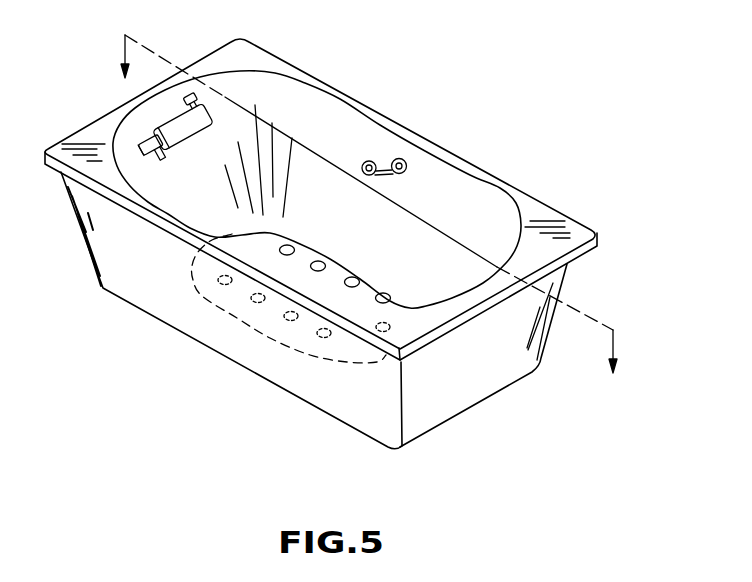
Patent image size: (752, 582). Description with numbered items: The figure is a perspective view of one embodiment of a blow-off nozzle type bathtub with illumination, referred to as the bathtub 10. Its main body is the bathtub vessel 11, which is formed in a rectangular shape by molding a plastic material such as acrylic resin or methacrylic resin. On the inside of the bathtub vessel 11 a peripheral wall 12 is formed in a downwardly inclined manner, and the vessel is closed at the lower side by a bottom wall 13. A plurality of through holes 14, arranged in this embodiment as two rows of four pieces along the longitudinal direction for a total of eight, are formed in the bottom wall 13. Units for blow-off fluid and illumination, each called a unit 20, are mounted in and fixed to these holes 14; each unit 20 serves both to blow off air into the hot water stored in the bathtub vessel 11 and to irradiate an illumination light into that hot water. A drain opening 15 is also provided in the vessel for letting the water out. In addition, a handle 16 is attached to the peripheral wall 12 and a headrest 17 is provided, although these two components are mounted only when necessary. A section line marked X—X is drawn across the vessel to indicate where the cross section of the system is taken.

The bathtub 10 is at (353, 235).
The bathtub vessel 11 is at (576, 220).
The peripheral wall 12 is at (479, 228).
The bottom wall 13 is at (343, 364).
The through holes 14 is at (384, 293).
The drain opening 15 is at (383, 334).
The handle 16 is at (391, 156).
The headrest 17 is at (182, 123).
The unit for blow-off fluid and illumination 20 is at (419, 206).